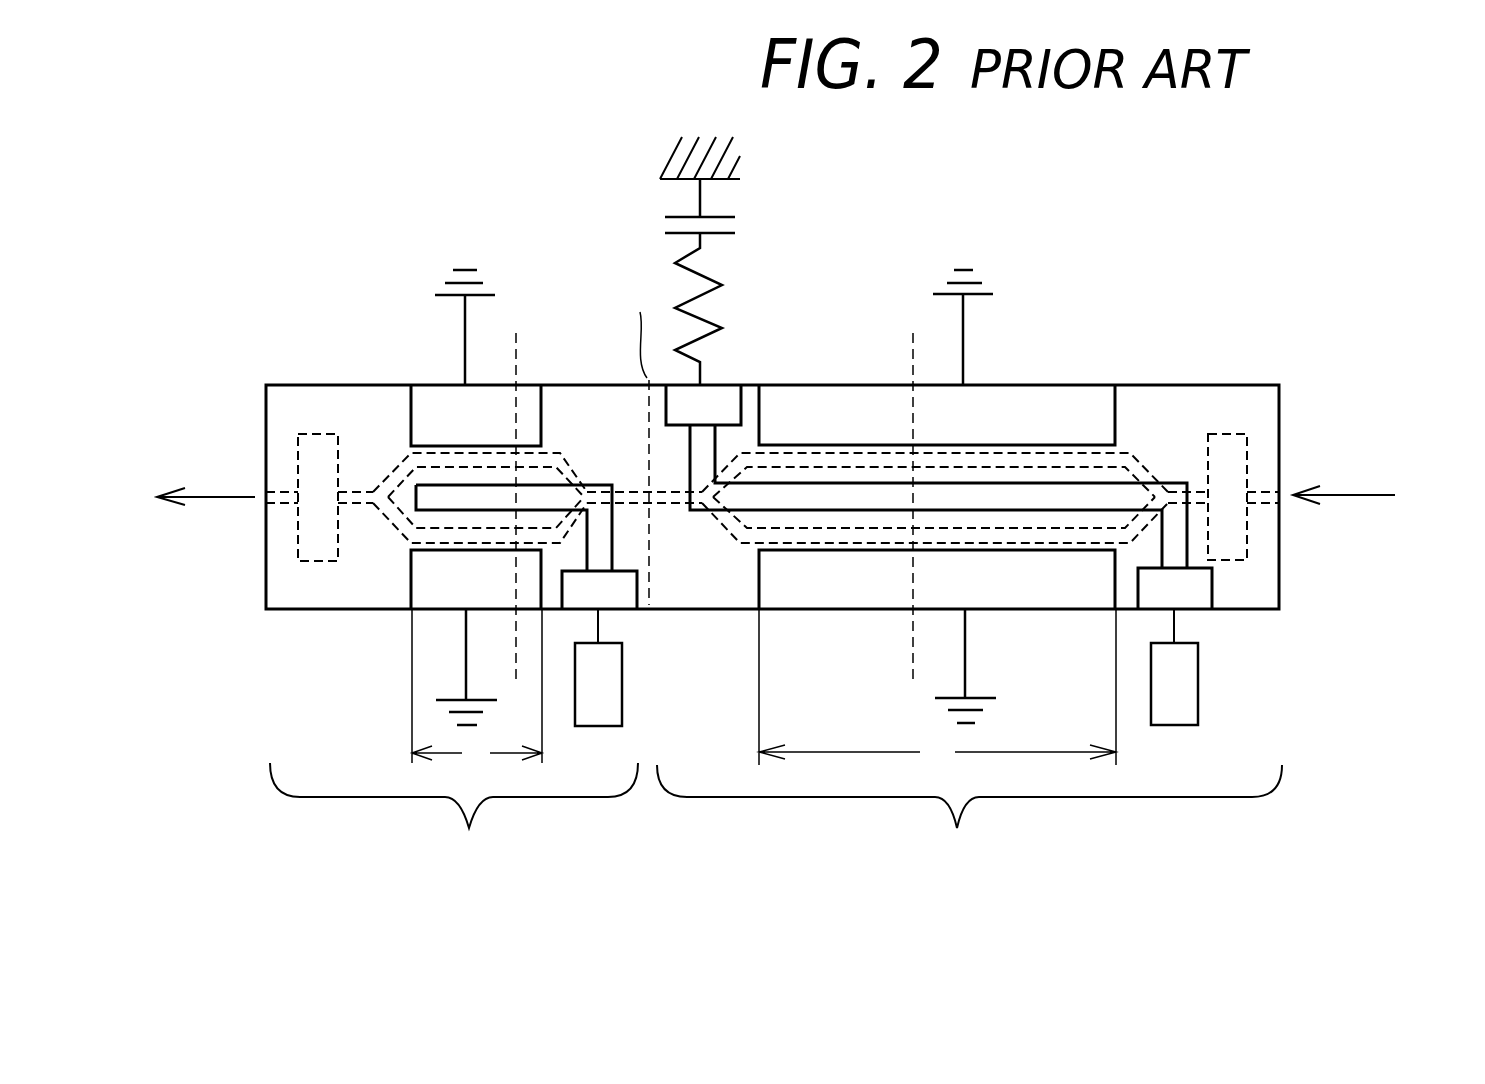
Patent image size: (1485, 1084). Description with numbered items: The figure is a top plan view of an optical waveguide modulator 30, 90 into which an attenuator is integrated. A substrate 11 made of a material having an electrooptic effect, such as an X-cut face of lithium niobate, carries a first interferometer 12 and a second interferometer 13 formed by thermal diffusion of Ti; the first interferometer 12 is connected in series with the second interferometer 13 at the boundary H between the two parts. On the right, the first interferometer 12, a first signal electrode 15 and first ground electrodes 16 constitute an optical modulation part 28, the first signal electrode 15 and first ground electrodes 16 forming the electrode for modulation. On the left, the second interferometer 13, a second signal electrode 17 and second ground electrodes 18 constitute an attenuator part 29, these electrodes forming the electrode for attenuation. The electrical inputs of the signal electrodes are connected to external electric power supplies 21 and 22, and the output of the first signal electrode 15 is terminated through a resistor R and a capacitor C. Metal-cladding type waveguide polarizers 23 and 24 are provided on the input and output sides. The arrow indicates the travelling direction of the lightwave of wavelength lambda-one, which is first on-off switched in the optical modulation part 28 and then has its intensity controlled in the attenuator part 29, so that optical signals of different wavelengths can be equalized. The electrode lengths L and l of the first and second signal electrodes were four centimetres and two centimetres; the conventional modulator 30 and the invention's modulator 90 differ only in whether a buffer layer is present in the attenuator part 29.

The substrate 11 is at (607, 413).
The first interferometer 12 is at (998, 460).
The second interferometer 13 is at (435, 458).
The first signal electrode 15 is at (1073, 502).
The first ground electrodes 16 is at (843, 412).
The second signal electrode 17 is at (428, 503).
The second ground electrodes 18 is at (452, 412).
The external electric power supply 21 is at (1190, 700).
The external electric power supply 22 is at (612, 690).
The metal-cladding type waveguide polarizer 23 is at (1225, 450).
The metal-cladding type waveguide polarizer 24 is at (317, 447).
The optical modulation part 28 is at (969, 819).
The attenuator part 29 is at (454, 819).
The optical waveguide modulator 30 is at (1257, 360).
The optical waveguide modulator 90 is at (801, 455).